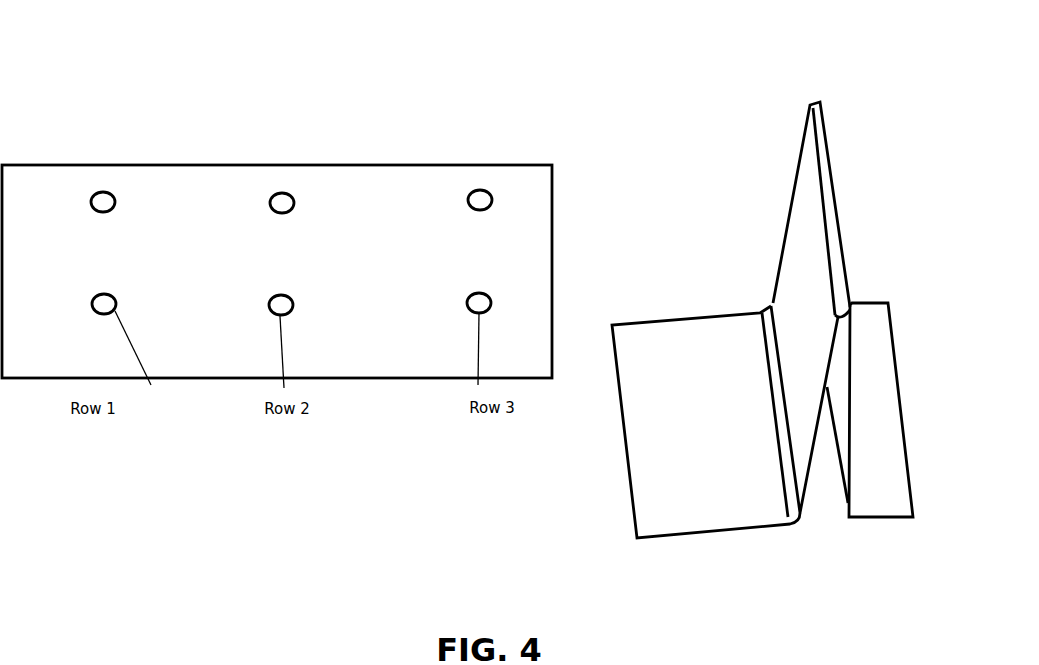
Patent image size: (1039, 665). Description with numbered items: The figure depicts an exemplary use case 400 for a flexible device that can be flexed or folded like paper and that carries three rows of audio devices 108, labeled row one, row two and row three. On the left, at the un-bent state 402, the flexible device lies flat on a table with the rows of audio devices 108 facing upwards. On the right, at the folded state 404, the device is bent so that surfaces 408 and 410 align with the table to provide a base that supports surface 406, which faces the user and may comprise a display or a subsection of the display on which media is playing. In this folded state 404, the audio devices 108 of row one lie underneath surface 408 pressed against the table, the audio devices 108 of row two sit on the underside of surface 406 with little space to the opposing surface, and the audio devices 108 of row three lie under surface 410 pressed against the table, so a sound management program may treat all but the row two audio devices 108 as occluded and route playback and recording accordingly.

The exemplary use case 400 is at (180, 52).
The un-bent state 402 is at (421, 150).
The audio devices 108 is at (475, 200).
The folded state 404 is at (780, 183).
The surface 406 is at (800, 265).
The surface 408 is at (708, 493).
The surface 410 is at (877, 467).